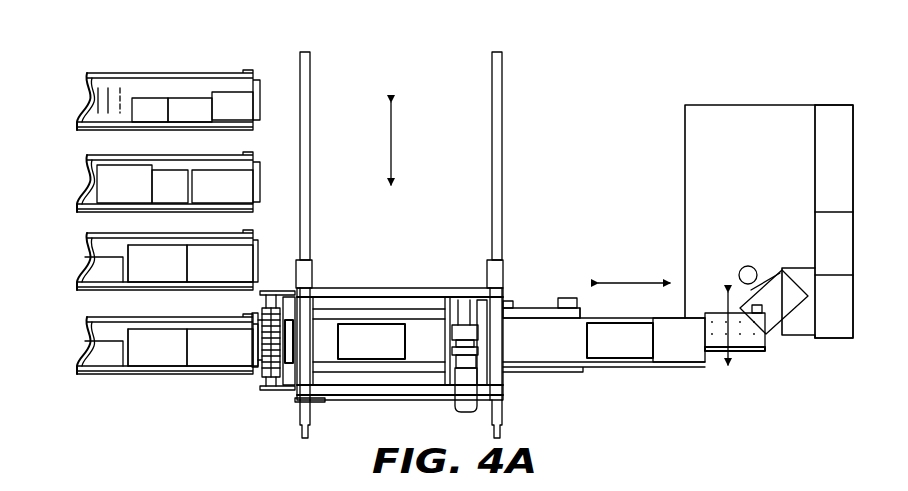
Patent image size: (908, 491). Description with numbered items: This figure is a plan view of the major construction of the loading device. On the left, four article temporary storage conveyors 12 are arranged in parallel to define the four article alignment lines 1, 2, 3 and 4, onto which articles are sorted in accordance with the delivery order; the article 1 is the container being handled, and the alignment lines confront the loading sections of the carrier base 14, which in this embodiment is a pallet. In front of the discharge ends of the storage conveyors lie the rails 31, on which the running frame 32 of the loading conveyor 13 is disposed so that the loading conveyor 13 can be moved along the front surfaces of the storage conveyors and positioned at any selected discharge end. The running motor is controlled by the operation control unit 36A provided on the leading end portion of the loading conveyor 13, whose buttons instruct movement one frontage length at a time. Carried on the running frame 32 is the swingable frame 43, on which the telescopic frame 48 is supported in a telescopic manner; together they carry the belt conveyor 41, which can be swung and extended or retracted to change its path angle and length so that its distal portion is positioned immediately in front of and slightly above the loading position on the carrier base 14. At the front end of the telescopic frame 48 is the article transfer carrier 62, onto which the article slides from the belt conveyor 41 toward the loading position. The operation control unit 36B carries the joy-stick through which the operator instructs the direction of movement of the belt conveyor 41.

The article 1 is at (847, 133).
The article alignment line 2 is at (159, 182).
The article alignment line 3 is at (158, 260).
The article alignment line 4 is at (158, 344).
The article temporary storage conveyor 12 is at (137, 71).
The loading conveyor 13 is at (377, 286).
The carrier base 14 is at (682, 126).
The rails 31 is at (491, 98).
The running frame 32 is at (430, 287).
The operation control unit 36A is at (565, 298).
The operation control unit 36B is at (733, 296).
The belt conveyor 41 is at (673, 352).
The swingable frame 43 is at (541, 372).
The telescopic frame 48 is at (622, 366).
The article transfer carrier 62 is at (747, 358).